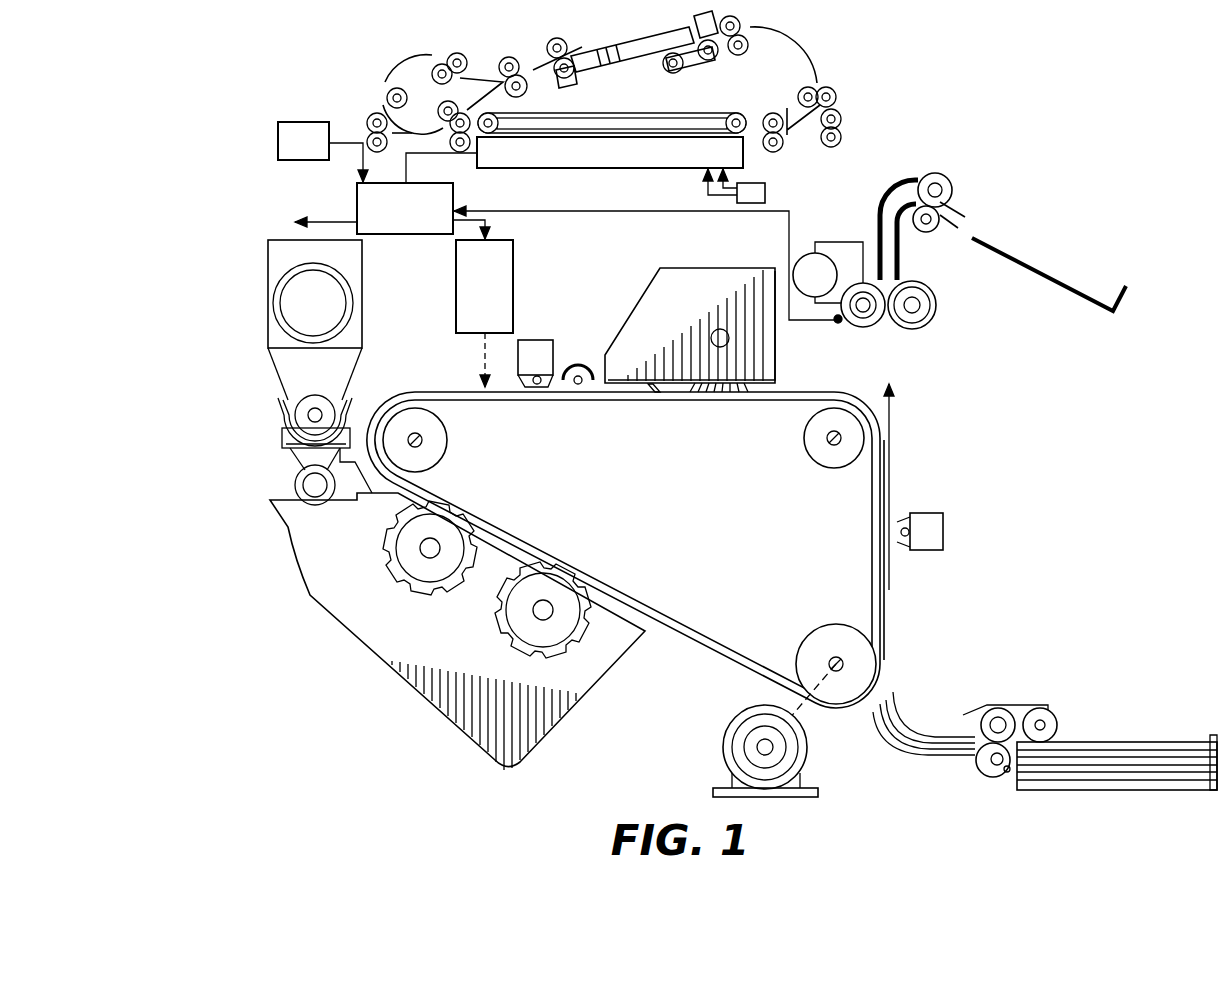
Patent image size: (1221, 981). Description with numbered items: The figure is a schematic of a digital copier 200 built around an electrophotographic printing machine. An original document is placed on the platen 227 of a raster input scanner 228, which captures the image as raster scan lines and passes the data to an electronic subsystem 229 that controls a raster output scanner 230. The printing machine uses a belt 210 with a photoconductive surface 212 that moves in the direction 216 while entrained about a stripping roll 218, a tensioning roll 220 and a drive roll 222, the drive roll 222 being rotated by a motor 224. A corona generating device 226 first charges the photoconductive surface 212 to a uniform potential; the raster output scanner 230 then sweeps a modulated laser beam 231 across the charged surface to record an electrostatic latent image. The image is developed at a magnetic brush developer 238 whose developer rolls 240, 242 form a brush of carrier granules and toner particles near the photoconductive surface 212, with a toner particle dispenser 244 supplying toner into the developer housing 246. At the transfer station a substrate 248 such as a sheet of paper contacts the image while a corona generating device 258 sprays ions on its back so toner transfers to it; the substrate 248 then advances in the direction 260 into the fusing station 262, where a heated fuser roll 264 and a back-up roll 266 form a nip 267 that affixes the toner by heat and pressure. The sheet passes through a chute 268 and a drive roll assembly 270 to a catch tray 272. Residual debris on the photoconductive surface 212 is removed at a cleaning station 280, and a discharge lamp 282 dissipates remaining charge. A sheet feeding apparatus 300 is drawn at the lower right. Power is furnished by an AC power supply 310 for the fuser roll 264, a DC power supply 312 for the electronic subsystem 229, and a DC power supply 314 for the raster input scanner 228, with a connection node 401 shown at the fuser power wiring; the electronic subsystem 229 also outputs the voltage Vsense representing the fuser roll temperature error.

The digital copier 200 is at (995, 90).
The belt 210 is at (623, 550).
The photoconductive surface 212 is at (687, 635).
The direction 216 is at (557, 418).
The stripping roll 218 is at (823, 455).
The tensioning roll 220 is at (432, 451).
The drive roll 222 is at (823, 630).
The motor 224 is at (717, 738).
The corona generating device 226 is at (535, 345).
The platen 227 is at (548, 137).
The raster input scanner 228 is at (604, 125).
The electronic subsystem 229 is at (355, 197).
The raster output scanner 230 is at (494, 313).
The modulated laser beam 231 is at (485, 363).
The magnetic brush developer 238 is at (457, 620).
The magnetic brush developer roll 240 is at (448, 527).
The magnetic brush developer roll 242 is at (557, 585).
The toner particle dispenser 244 is at (272, 348).
The developer housing 246 is at (427, 700).
The substrate 248 is at (892, 488).
The corona generating device 258 is at (942, 535).
The direction 260 is at (890, 400).
The fusing station 262 is at (959, 251).
The heated fuser roll 264 is at (863, 327).
The back-up roll 266 is at (927, 297).
The nip 267 is at (892, 333).
The chute 268 is at (895, 190).
The drive roll assembly 270 is at (953, 173).
The catch tray 272 is at (1055, 275).
The cleaning station 280 is at (678, 278).
The discharge lamp 282 is at (583, 365).
The sheet feeding apparatus 300 is at (1023, 672).
The AC power supply 310 is at (827, 255).
The DC power supply 312 is at (287, 123).
The DC power supply 314 is at (758, 188).
The connection node 401 is at (853, 320).